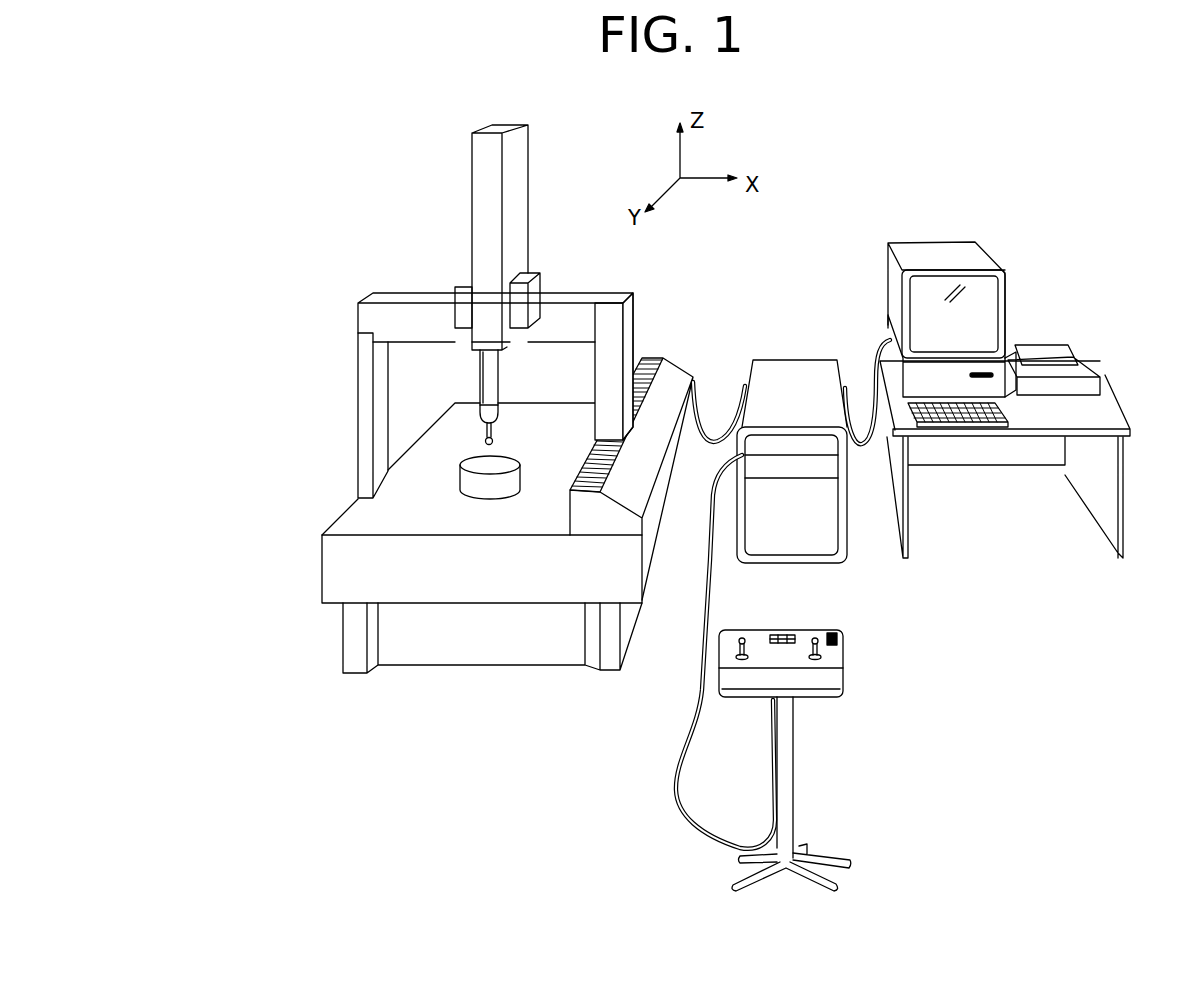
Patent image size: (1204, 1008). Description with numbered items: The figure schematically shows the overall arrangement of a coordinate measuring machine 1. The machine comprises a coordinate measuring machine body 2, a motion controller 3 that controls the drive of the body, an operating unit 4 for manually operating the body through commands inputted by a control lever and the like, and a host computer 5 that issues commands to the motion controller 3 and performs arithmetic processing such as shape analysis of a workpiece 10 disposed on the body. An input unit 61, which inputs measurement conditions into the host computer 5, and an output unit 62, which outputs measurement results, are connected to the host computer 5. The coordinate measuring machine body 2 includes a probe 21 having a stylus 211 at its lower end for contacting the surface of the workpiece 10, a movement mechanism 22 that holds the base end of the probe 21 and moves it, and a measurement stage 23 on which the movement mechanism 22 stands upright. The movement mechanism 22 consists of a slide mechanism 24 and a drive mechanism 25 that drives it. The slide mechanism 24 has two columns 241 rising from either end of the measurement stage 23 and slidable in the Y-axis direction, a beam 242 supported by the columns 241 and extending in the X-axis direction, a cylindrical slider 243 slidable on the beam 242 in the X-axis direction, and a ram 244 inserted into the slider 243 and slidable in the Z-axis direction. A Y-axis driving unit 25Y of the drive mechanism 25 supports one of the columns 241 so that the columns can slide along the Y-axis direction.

The coordinate measuring machine 1 is at (948, 190).
The coordinate measuring machine body 2 is at (328, 158).
The movement mechanism 22 is at (330, 258).
The measurement stage 23 is at (355, 516).
The slide mechanism 24 is at (500, 311).
The columns 241 is at (613, 318).
The beam 242 is at (578, 308).
The slider 243 is at (512, 168).
The ram 244 is at (500, 373).
The drive mechanism 25 is at (667, 462).
The Y-axis driving unit 25Y is at (675, 378).
The probe 21 is at (498, 412).
The stylus 211 is at (497, 442).
The workpiece 10 is at (457, 495).
The motion controller 3 is at (800, 388).
The operating unit 4 is at (843, 653).
The host computer 5 is at (983, 367).
The input unit 61 is at (977, 425).
The output unit 62 is at (1087, 372).